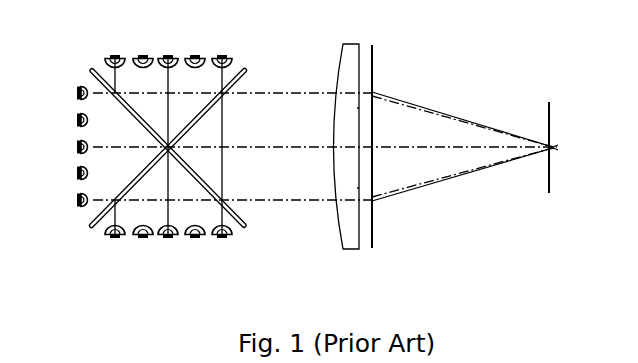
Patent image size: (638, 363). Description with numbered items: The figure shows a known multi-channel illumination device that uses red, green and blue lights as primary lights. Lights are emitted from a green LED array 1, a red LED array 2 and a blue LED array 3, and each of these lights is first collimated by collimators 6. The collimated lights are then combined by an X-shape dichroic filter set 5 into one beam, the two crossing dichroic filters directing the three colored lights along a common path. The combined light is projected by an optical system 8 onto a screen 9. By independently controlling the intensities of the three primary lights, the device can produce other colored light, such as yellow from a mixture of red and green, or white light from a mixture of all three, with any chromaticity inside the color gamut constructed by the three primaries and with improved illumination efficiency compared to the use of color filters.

The green LED array 1 is at (77, 97).
The red LED array 2 is at (143, 54).
The blue LED array 3 is at (168, 240).
The X-shape dichroic filter set 5 is at (91, 64).
The collimators 6 is at (223, 241).
The optical system 8 is at (359, 44).
The screen 9 is at (548, 103).